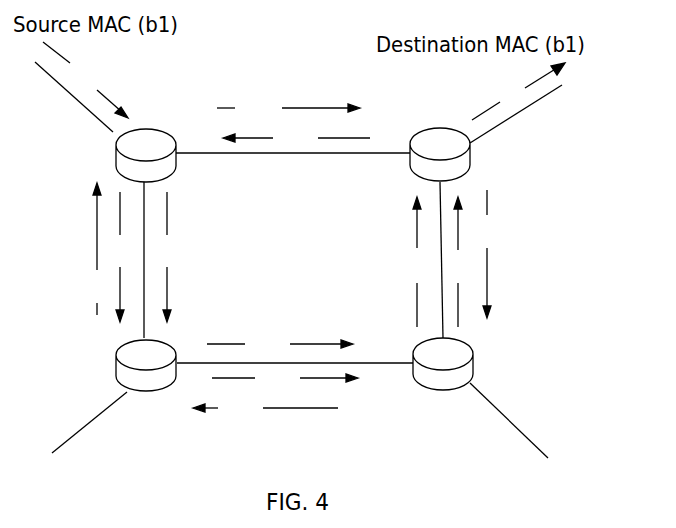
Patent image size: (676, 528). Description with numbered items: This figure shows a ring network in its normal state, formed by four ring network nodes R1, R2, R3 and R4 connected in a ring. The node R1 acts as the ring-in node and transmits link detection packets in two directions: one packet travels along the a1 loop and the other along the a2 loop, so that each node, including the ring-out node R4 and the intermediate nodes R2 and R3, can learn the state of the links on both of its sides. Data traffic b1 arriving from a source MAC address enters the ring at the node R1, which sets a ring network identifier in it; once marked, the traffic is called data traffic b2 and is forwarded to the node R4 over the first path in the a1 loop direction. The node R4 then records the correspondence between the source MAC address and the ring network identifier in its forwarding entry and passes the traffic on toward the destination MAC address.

The ring network node R1 is at (123, 155).
The ring network node R2 is at (126, 362).
The ring network node R3 is at (466, 358).
The ring network node R4 is at (440, 141).
The a1 loop a1 is at (292, 256).
The a2 loop a2 is at (290, 257).
The data traffic b1 is at (304, 81).
The data traffic b2 is at (295, 273).